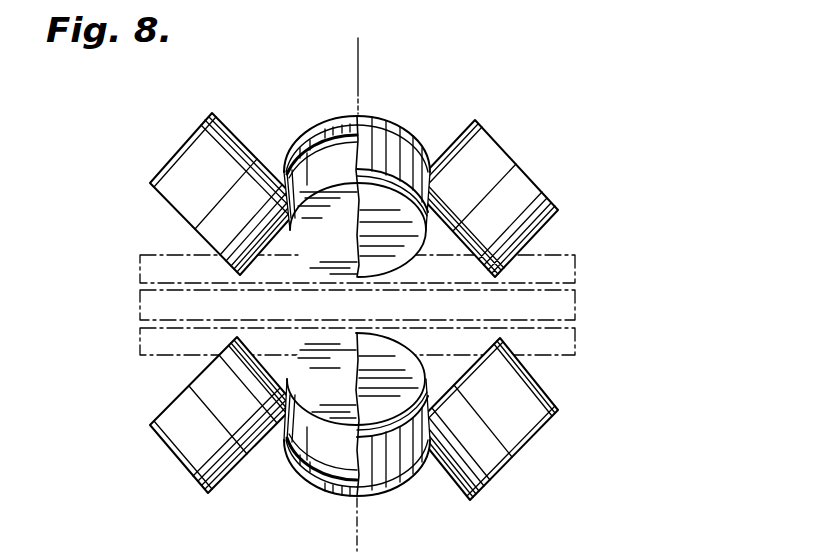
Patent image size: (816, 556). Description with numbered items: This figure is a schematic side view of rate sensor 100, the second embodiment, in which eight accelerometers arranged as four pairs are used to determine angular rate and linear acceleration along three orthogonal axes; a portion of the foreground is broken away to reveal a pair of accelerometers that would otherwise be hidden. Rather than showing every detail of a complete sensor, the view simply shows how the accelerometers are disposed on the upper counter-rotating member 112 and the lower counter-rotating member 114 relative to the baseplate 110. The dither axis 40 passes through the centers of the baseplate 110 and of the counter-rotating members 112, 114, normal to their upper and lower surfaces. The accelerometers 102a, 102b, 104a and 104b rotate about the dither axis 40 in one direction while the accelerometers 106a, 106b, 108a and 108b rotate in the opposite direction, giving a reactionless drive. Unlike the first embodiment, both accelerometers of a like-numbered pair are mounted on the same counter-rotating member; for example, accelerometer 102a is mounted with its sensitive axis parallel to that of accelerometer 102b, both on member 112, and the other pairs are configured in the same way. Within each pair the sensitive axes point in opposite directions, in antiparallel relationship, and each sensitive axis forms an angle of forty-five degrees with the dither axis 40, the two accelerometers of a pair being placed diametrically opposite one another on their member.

The dither axis 40 is at (362, 54).
The rate sensor 100 is at (524, 86).
The accelerometer 102a is at (178, 167).
The accelerometer 102b is at (516, 188).
The accelerometer 104a is at (384, 140).
The accelerometer 104b is at (332, 127).
The accelerometer 106a is at (386, 478).
The accelerometer 106b is at (320, 488).
The accelerometer 108a is at (174, 444).
The accelerometer 108b is at (512, 438).
The baseplate 110 is at (577, 306).
The upper counter-rotating member 112 is at (138, 262).
The lower counter-rotating member 114 is at (577, 353).